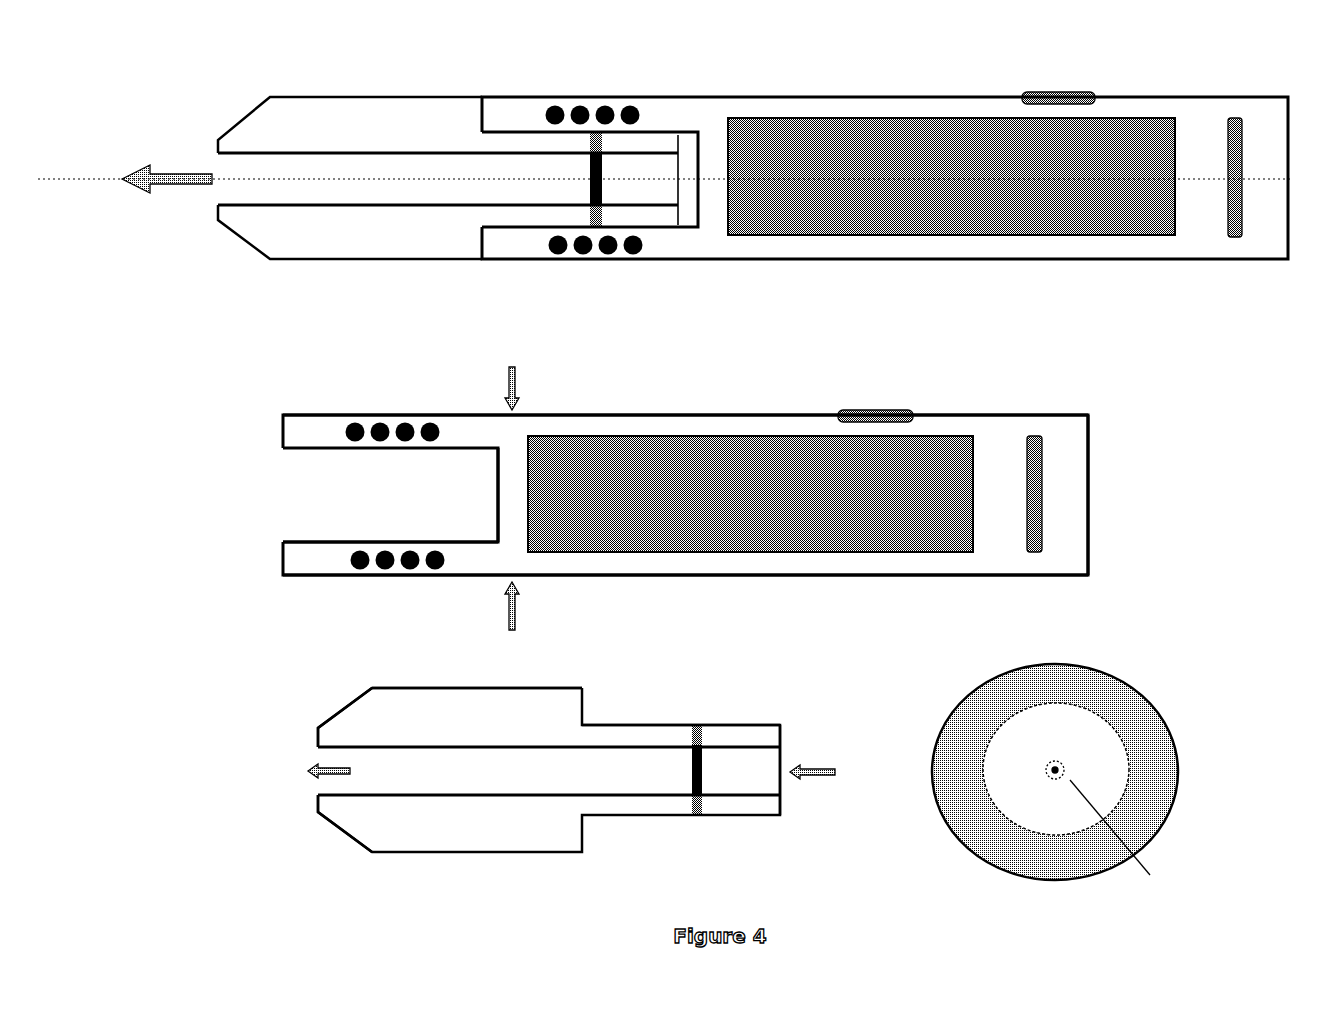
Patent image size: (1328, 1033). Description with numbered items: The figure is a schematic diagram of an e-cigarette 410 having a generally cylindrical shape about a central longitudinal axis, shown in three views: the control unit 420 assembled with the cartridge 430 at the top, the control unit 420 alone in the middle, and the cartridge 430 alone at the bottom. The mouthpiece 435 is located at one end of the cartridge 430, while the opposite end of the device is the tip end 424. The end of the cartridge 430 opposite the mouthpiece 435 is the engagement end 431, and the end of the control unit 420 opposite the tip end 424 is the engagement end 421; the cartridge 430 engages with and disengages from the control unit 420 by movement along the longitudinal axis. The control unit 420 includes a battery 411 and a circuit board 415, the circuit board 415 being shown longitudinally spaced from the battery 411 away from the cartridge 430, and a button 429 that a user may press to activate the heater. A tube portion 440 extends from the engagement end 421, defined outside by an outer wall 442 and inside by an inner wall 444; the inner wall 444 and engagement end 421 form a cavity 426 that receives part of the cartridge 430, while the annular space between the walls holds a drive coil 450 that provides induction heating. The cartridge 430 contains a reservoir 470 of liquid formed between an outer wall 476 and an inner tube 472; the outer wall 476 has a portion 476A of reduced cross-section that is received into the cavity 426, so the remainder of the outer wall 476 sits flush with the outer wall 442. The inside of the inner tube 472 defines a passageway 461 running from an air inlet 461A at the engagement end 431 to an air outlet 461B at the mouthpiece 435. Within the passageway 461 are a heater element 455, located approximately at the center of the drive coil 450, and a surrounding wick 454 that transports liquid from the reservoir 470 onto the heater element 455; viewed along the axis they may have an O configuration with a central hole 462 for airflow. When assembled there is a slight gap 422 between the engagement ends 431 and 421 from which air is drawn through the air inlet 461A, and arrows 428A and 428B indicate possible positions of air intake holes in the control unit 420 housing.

The e-cigarette 410 is at (222, 68).
The battery 411 is at (940, 462).
The circuit board 415 is at (1048, 525).
The control unit 420 is at (1203, 268).
The engagement end of the control unit 421 is at (495, 513).
The gap 422 is at (690, 212).
The tip end 424 is at (1098, 494).
The cavity 426 is at (400, 506).
The arrow 428A is at (513, 378).
The arrow 428B is at (513, 623).
The button 429 is at (845, 406).
The cartridge 430 is at (260, 272).
The engagement end of the cartridge 431 is at (785, 806).
The mouthpiece 435 is at (318, 797).
The tube portion 440 is at (283, 413).
The outer wall 442 is at (325, 578).
The inner wall 444 is at (315, 540).
The drive coil 450 is at (380, 420).
The wick 454 is at (700, 803).
The heater element 455 is at (700, 778).
The passageway 461 is at (522, 783).
The air inlet 461A is at (824, 761).
The air outlet 461B is at (304, 773).
The central hole 462 is at (1028, 793).
The reservoir 470 is at (470, 732).
The inner tube 472 is at (520, 800).
The outer wall 476 is at (560, 686).
The portion of reduced cross-section 476A is at (628, 722).